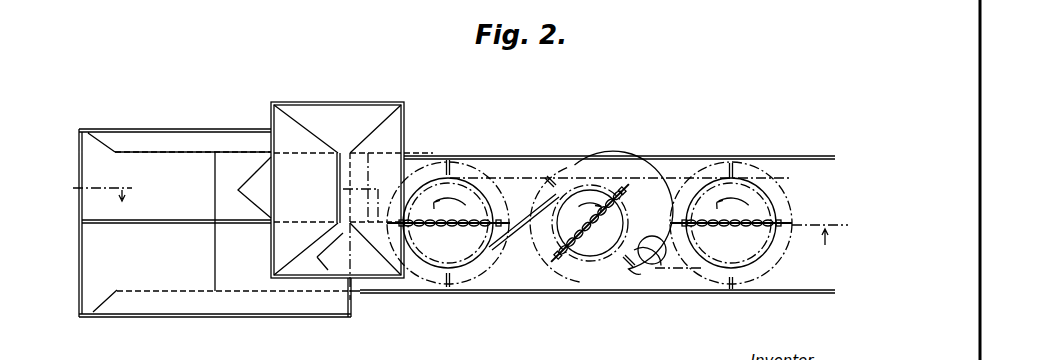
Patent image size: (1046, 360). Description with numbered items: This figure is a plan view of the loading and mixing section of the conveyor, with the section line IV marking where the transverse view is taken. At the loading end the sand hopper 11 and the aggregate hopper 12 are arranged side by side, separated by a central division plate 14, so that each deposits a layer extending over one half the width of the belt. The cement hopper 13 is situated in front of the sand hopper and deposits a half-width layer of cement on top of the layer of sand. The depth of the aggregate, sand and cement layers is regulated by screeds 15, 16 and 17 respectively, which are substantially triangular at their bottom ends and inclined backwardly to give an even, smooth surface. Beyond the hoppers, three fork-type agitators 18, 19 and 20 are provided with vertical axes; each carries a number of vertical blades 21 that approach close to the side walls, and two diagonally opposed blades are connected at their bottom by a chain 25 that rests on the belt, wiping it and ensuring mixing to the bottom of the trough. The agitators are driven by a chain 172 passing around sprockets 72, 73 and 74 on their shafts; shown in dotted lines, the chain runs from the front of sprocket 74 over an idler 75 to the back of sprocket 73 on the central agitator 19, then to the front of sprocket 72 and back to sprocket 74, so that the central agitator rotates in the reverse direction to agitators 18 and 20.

The sand hopper 11 is at (107, 165).
The aggregate hopper 12 is at (113, 277).
The cement hopper 13 is at (342, 127).
The central division plate 14 is at (139, 224).
The screed 15 is at (333, 253).
The screed 16 is at (258, 188).
The screed 17 is at (357, 178).
The agitator 18 is at (468, 193).
The agitator 19 is at (601, 173).
The agitator 20 is at (748, 178).
The vertical blades 21 is at (452, 160).
The chain 25 is at (465, 226).
The sprocket 72 is at (425, 260).
The sprocket 73 is at (572, 257).
The sprocket 74 is at (703, 260).
The idler 75 is at (652, 258).
The chain 172 is at (522, 178).
The section line IV- IV is at (460, 227).